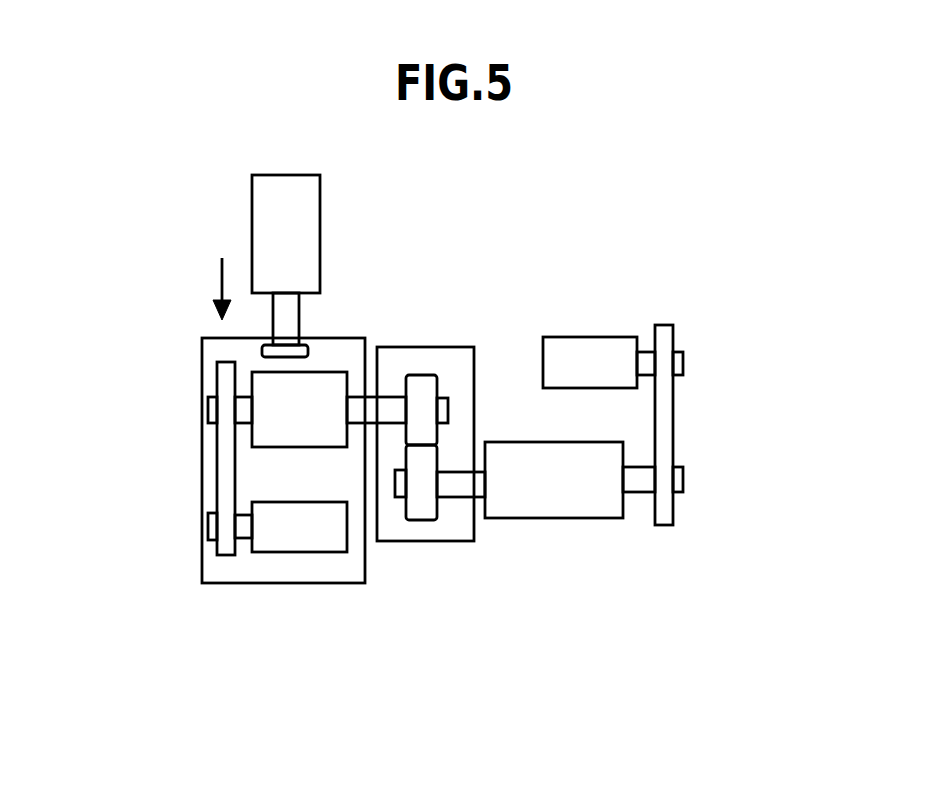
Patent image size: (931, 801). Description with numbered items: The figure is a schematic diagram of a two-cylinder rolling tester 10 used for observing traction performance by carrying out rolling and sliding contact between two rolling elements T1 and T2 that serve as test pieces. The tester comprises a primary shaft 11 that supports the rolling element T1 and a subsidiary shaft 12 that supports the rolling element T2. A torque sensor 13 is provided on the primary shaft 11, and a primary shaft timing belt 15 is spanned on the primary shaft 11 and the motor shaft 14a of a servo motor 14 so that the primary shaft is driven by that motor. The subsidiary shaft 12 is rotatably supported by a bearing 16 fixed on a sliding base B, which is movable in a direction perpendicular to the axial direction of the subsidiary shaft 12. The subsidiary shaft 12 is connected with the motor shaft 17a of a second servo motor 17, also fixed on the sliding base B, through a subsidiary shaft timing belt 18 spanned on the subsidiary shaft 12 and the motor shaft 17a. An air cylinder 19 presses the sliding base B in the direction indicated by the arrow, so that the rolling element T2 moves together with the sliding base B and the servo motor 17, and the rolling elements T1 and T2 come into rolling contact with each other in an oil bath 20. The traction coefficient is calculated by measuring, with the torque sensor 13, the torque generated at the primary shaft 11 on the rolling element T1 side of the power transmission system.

The two-cylinder rolling tester 10 is at (553, 256).
The primary shaft 11 is at (453, 490).
The subsidiary shaft 12 is at (356, 407).
The torque sensor 13 is at (585, 497).
The servo motor 14 is at (592, 350).
The motor shaft 14a is at (685, 362).
The primary shaft timing belt 15 is at (668, 423).
The bearing 16 is at (262, 388).
The servo motor 17 is at (320, 537).
The motor shaft 17a is at (212, 528).
The subsidiary shaft timing belt 18 is at (226, 458).
The air cylinder 19 is at (300, 219).
The oil bath 20 is at (452, 363).
The sliding base B is at (246, 563).
The rolling element T1 is at (422, 503).
The rolling element T2 is at (423, 393).